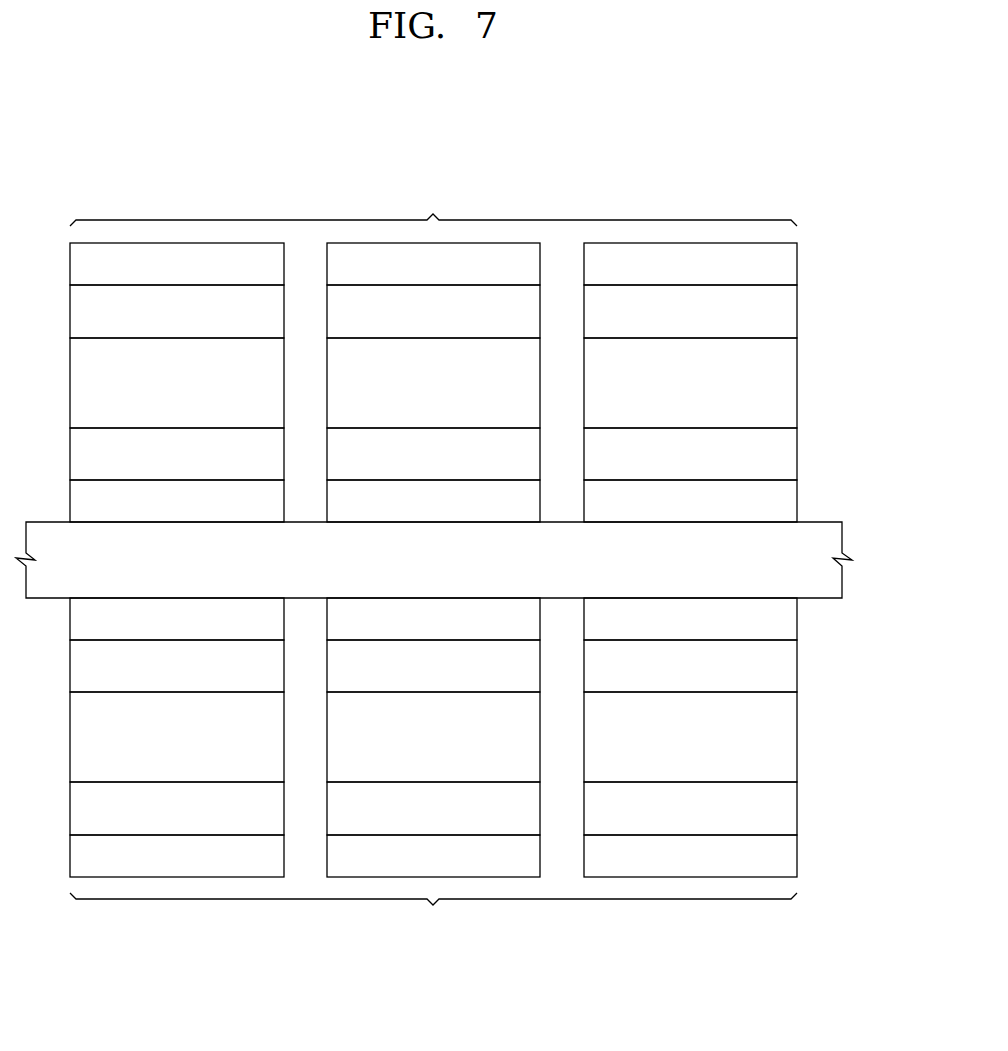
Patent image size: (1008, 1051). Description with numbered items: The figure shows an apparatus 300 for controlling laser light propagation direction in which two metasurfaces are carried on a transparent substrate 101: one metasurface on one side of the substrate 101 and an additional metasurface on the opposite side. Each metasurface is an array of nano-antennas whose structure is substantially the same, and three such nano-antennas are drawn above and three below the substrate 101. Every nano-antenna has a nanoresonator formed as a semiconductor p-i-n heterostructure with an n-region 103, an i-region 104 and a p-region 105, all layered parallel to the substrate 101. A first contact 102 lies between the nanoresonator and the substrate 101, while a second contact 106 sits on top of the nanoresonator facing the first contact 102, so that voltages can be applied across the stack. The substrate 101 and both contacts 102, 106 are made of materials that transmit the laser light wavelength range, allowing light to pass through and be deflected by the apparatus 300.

The apparatus for controlling laser light propagation direction 300 is at (839, 198).
The substrate 101 is at (108, 572).
The first contact 102 is at (200, 515).
The n-region 103 is at (200, 468).
The i-region 104 is at (200, 397).
The p-region 105 is at (200, 325).
The second contact 106 is at (200, 278).